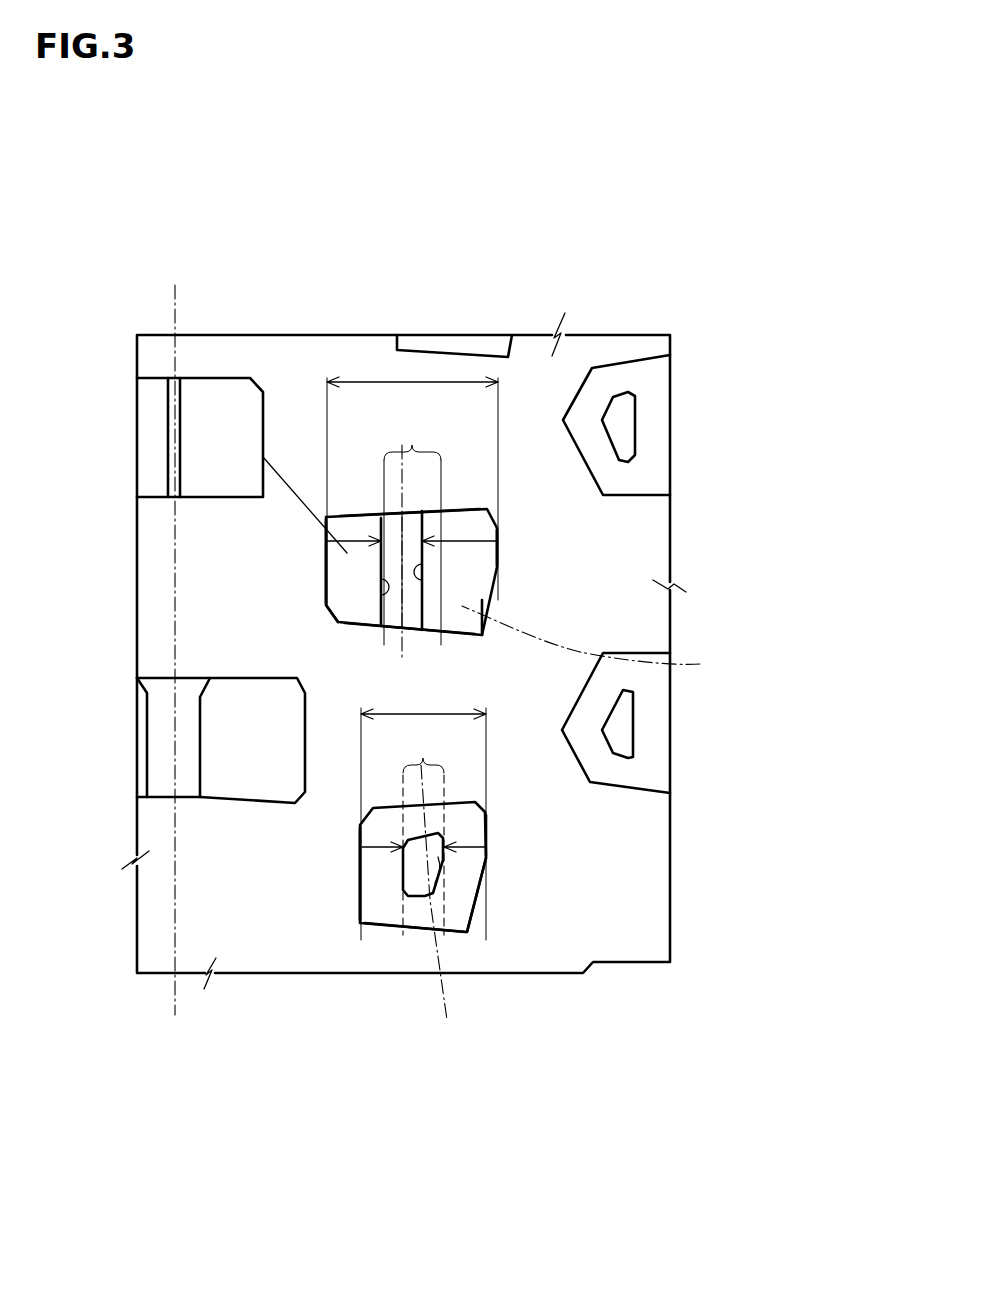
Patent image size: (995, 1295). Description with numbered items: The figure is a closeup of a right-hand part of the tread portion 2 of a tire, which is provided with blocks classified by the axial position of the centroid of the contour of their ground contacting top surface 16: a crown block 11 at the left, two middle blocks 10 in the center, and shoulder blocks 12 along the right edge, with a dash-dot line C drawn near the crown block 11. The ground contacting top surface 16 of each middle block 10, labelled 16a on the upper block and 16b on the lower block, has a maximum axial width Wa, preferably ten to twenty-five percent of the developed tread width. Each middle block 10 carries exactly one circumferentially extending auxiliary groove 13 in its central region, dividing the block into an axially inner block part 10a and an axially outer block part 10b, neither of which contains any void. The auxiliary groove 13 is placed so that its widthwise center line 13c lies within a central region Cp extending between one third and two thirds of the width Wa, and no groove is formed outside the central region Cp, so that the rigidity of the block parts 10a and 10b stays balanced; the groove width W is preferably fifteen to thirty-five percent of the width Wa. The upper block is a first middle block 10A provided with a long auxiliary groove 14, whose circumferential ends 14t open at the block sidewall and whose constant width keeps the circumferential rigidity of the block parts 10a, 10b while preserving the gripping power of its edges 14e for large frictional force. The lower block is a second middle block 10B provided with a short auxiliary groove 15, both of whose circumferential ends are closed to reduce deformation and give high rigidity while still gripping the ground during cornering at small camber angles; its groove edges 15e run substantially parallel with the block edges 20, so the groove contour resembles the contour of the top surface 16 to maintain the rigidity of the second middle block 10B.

The tread portion 2 is at (527, 244).
The crown block 11 is at (220, 392).
The shoulder block 12 is at (638, 371).
The middle block 10 is at (292, 687).
The first middle block 10A is at (255, 466).
The second middle block 10B is at (421, 958).
The axially inner block part 10a is at (347, 572).
The axially outer block part 10b is at (477, 552).
The auxiliary groove 13 is at (401, 579).
The long auxiliary groove 14 is at (392, 623).
The short auxiliary groove 15 is at (403, 880).
The center line 13c is at (574, 748).
The circumferential ends 14t is at (413, 510).
The edges 14e is at (343, 605).
The groove edges 15e is at (458, 922).
The ground contacting top surface 16 is at (594, 869).
The first rake face 16a is at (481, 611).
The second rake face 16b is at (393, 928).
The block edges 20 is at (487, 855).
The center axis C is at (175, 636).
The width of the auxiliary groove W is at (414, 540).
The maximum width Wa is at (422, 380).
The central region Cp is at (414, 674).